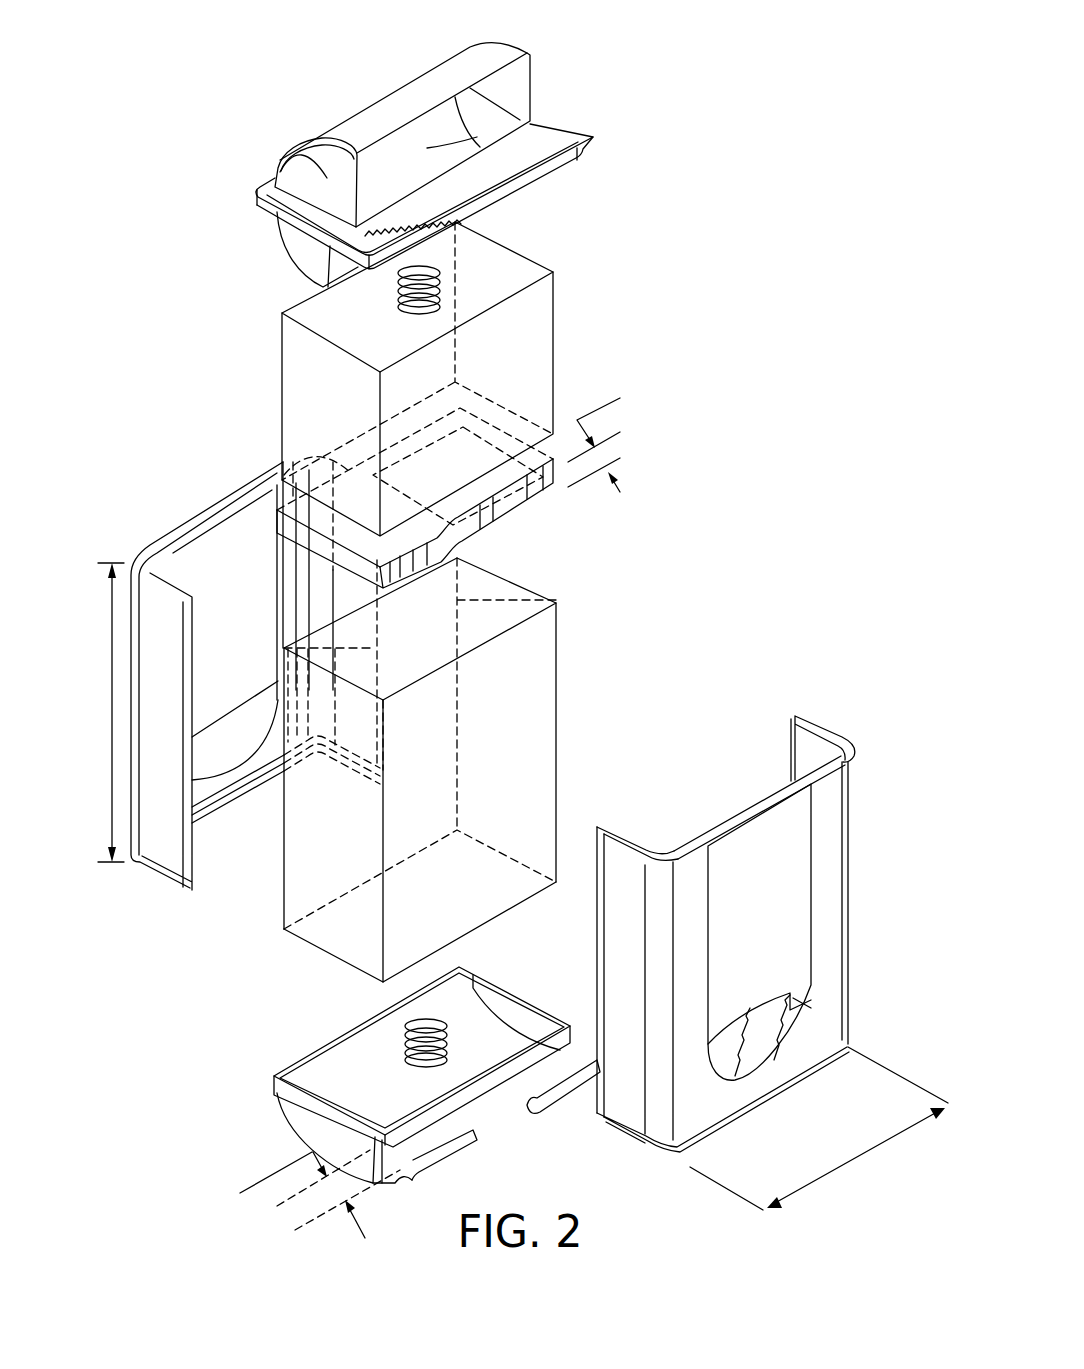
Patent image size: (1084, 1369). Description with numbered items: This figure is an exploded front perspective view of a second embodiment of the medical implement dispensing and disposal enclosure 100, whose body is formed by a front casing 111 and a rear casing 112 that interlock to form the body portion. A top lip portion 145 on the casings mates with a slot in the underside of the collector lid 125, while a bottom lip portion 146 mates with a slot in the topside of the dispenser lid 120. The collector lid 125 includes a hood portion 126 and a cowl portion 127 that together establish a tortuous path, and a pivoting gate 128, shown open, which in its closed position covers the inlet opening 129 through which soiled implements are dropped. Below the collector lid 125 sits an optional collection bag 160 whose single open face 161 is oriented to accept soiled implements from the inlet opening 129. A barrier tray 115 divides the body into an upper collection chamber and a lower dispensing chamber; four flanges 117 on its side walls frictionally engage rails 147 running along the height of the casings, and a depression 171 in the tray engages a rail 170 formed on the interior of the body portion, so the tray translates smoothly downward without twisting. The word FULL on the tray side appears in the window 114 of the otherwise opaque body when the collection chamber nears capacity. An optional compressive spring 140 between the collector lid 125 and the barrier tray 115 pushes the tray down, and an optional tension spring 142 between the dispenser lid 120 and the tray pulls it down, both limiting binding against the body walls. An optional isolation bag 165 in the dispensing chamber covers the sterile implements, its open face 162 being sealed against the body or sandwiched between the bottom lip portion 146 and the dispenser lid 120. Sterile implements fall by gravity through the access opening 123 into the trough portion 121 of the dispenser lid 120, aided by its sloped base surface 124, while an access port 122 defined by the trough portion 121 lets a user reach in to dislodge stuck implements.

The enclosure 100 is at (199, 188).
The collector lid 125 is at (429, 157).
The hood portion 126 is at (327, 180).
The inlet opening 129 is at (527, 88).
The gate 128 is at (563, 145).
The cowl portion 127 is at (323, 255).
The compressive spring 140 is at (400, 298).
The open face 161 is at (520, 250).
The collection bag 160 is at (471, 366).
The barrier tray 115 is at (480, 498).
The flanges 117 is at (547, 492).
The depression 171 is at (500, 510).
The rails 147 is at (273, 485).
The rear casing 112 is at (172, 838).
The isolation bag 165 is at (437, 770).
The open face 162 is at (333, 957).
The tension spring 142 is at (447, 1037).
The dispenser lid 120 is at (399, 1111).
The base surface 124 is at (327, 1087).
The trough portion 121 is at (393, 1183).
The access opening 123 is at (487, 1113).
The access port 122 is at (533, 1118).
The front casing 111 is at (766, 913).
The top lip portion 145 is at (814, 716).
The rail 170 is at (760, 887).
The window 114 is at (797, 1043).
The bottom lip portion 146 is at (740, 1110).